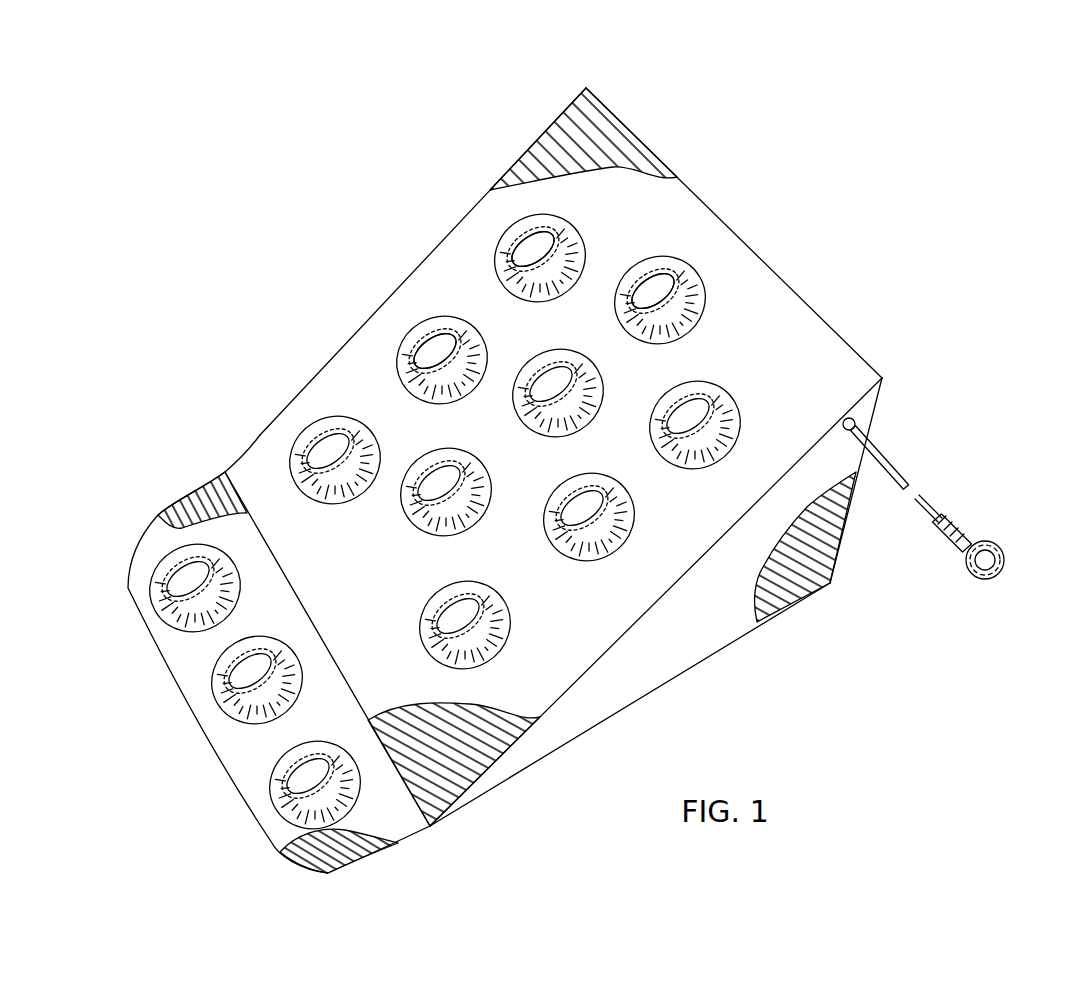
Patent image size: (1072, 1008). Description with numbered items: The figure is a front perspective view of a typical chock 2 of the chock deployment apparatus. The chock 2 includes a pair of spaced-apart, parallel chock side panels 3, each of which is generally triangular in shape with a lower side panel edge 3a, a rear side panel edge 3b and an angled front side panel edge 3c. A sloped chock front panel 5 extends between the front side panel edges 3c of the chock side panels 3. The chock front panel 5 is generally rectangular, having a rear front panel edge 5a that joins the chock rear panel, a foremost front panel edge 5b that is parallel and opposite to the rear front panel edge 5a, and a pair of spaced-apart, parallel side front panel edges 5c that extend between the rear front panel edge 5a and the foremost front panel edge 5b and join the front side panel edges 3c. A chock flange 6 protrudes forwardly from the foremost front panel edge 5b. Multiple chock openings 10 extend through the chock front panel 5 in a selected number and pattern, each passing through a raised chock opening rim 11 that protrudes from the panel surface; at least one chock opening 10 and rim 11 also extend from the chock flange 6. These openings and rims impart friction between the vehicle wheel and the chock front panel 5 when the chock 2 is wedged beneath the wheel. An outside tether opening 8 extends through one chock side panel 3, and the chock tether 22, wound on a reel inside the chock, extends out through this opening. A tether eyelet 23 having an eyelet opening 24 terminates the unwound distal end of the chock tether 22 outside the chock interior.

The chock 2 is at (338, 346).
The chock side panel 3 is at (677, 645).
The lower side panel edge 3a is at (664, 686).
The rear side panel edge 3b is at (875, 410).
The angled front side panel edge 3c is at (715, 543).
The chock front panel 5 is at (764, 315).
The rear front panel edge 5a is at (850, 344).
The foremost front panel edge 5b is at (347, 682).
The side front panel edge 5c is at (413, 272).
The chock flange 6 is at (181, 658).
The outside tether opening 8 is at (851, 436).
The chock opening 10 is at (630, 297).
The raised chock opening rim 11 is at (647, 262).
The chock tether 22 is at (940, 518).
The tether eyelet 23 is at (1004, 550).
The eyelet opening 24 is at (967, 567).